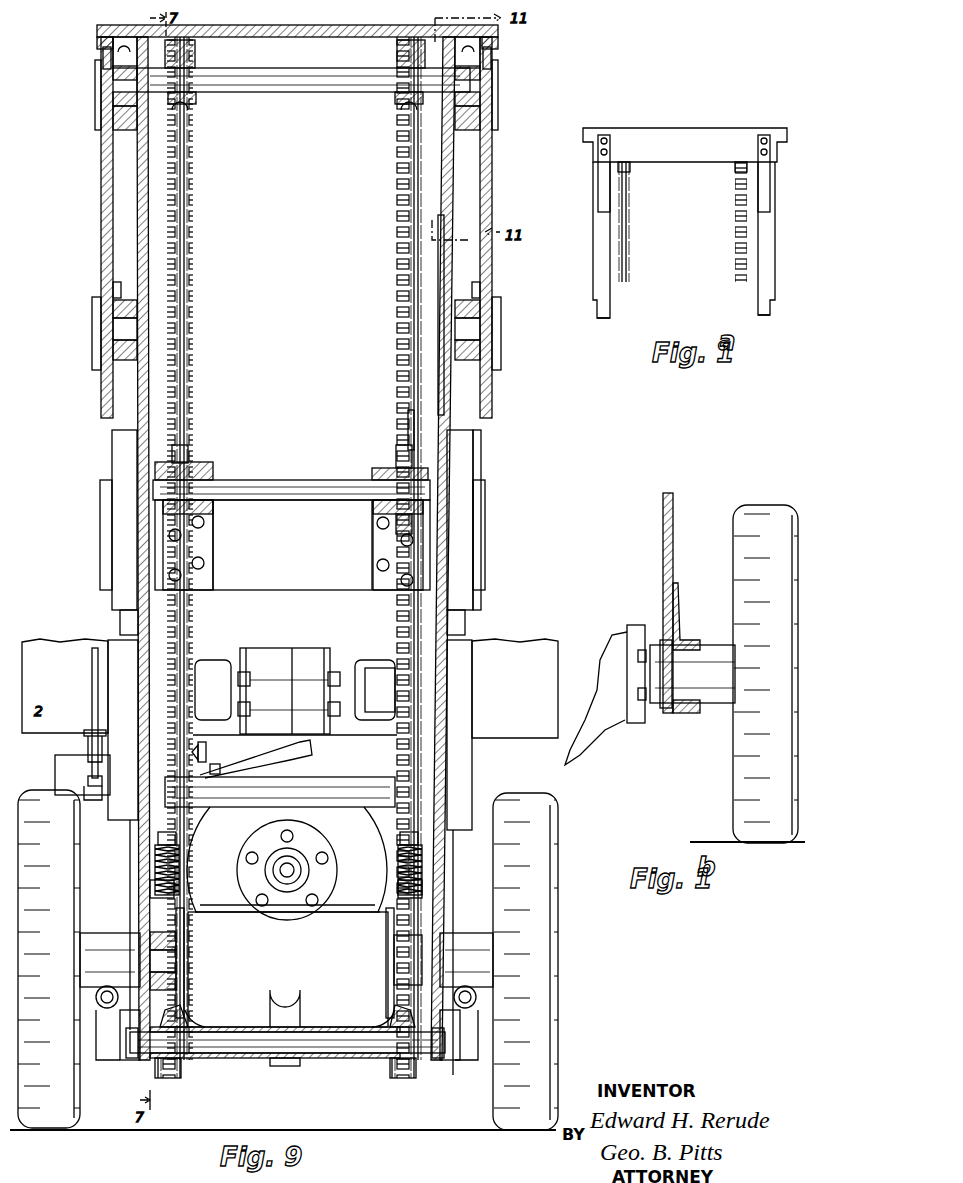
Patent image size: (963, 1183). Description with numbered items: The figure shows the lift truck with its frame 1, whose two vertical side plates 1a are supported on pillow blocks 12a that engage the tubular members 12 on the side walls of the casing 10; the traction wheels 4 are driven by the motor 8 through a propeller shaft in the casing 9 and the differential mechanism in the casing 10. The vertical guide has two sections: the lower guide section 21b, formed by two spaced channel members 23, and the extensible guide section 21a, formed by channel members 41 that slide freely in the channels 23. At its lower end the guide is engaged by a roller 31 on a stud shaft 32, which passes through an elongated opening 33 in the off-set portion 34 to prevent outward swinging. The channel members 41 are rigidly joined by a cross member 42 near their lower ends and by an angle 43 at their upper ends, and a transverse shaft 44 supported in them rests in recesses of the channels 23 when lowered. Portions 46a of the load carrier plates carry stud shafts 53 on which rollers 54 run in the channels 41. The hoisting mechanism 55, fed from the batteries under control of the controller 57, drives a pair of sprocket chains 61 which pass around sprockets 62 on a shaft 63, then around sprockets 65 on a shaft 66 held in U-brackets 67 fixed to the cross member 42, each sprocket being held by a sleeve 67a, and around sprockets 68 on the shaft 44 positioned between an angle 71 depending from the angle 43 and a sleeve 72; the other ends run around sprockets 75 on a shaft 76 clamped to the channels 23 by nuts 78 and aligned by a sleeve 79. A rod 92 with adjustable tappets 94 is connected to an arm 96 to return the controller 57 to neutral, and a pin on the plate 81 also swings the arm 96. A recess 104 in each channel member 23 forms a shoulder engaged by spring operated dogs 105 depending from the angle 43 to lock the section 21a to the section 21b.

In FIG. 1B, the frame 1 is at (675, 603).
In FIG. 9, the vertical side plates 1a is at (460, 852).
In FIG. 9, the traction wheels 4 is at (80, 1100).
In FIG. 1B, the traction wheels 4 is at (733, 772).
In FIG. 9, the motor 8 is at (287, 859).
In FIG. 9, the casing 9 is at (318, 840).
In FIG. 9, the casing 10 is at (288, 969).
In FIG. 1B, the casing 10 is at (590, 748).
In FIG. 9, the tubular members 12 is at (95, 933).
In FIG. 1B, the tubular members 12 is at (728, 645).
In FIG. 1B, the pillow blocks 12a is at (688, 640).
In FIG. 9, the guide section 21a is at (482, 455).
In FIG. 9, the guide section 21b is at (405, 430).
In FIG. 9, the channel members 23 is at (120, 905).
In FIG. 1A, the channel members 23 is at (597, 316).
In FIG. 9, the roller 31 is at (160, 928).
In FIG. 9, the stud shaft 32 is at (185, 962).
In FIG. 9, the elongated opening 33 is at (190, 942).
In FIG. 9, the off-set portion 34 is at (190, 928).
In FIG. 9, the channel members 41 is at (118, 612).
In FIG. 1A, the channel members 41 is at (593, 268).
In FIG. 9, the cross member 42 is at (292, 545).
In FIG. 9, the angle 43 is at (100, 26).
In FIG. 1A, the angle 43 is at (672, 120).
In FIG. 9, the transverse shaft 44 is at (300, 92).
In FIG. 9, the inwardly extending portions 46a is at (490, 185).
In FIG. 9, the stud shafts 53 is at (120, 93).
In FIG. 9, the rollers 54 is at (101, 50).
In FIG. 9, the hoisting mechanism 55 is at (290, 682).
In FIG. 9, the controller 57 is at (56, 775).
In FIG. 9, the sprocket chains 61 is at (185, 325).
In FIG. 1A, the sprocket chains 61 is at (632, 232).
In FIG. 9, the sprockets 62 is at (395, 755).
In FIG. 9, the shaft 63 is at (395, 782).
In FIG. 9, the sprockets 65 is at (190, 440).
In FIG. 9, the shaft 66 is at (308, 480).
In FIG. 9, the U-brackets 67 is at (214, 545).
In FIG. 9, the sleeve 67a is at (200, 462).
In FIG. 9, the sprockets 68 is at (190, 118).
In FIG. 9, the angle 71 is at (200, 100).
In FIG. 1A, the angle 71 is at (632, 168).
In FIG. 9, the sleeve 72 is at (157, 95).
In FIG. 9, the sprockets 75 is at (190, 1005).
In FIG. 9, the shaft 76 is at (258, 1058).
In FIG. 9, the nuts 78 is at (125, 1065).
In FIG. 9, the sleeve 79 is at (340, 1055).
In FIG. 9, the plate 81 is at (385, 898).
In FIG. 9, the rod 92 is at (92, 681).
In FIG. 9, the adjustable tappets 94 is at (85, 728).
In FIG. 9, the arm 96 is at (84, 800).
In FIG. 1A, the recess 104 is at (598, 196).
In FIG. 1A, the spring operated dogs 105 is at (600, 178).